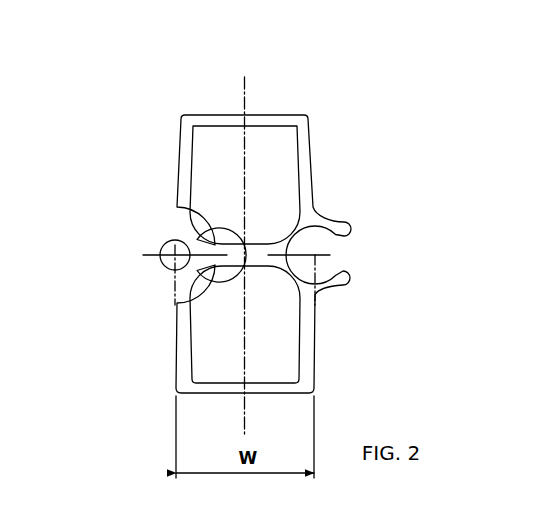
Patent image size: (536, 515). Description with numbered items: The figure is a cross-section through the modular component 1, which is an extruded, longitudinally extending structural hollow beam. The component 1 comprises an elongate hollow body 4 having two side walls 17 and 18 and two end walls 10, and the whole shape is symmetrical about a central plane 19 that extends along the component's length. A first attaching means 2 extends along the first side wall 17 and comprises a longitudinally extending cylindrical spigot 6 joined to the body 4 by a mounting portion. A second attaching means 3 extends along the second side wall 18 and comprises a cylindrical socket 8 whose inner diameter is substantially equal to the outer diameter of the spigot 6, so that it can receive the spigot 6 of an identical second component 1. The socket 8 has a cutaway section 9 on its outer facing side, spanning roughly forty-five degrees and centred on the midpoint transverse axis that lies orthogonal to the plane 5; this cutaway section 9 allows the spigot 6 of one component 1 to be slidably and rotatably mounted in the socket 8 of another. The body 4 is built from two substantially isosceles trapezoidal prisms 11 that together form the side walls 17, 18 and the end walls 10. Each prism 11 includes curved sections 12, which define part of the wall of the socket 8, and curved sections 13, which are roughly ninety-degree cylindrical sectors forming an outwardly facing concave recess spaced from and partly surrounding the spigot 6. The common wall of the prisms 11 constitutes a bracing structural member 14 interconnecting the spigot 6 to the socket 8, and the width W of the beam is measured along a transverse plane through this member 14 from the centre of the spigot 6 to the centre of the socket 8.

The modular component 1 is at (325, 176).
The first attaching means 2 is at (162, 266).
The second attaching means 3 is at (340, 225).
The hollow body 4 is at (318, 332).
The plane 5 is at (243, 168).
The cylindrical spigot 6 is at (150, 240).
The cylindrical socket 8 is at (340, 282).
The cutaway section 9 is at (330, 255).
The end walls 10 is at (262, 113).
The isosceles trapezoidal prisms 11 is at (185, 140).
The curved sections 12 is at (293, 287).
The curved sections 13 is at (190, 208).
The bracing structural member 14 is at (256, 248).
The first side wall 17 is at (176, 163).
The second side wall 18 is at (315, 150).
The central plane 19 is at (303, 250).